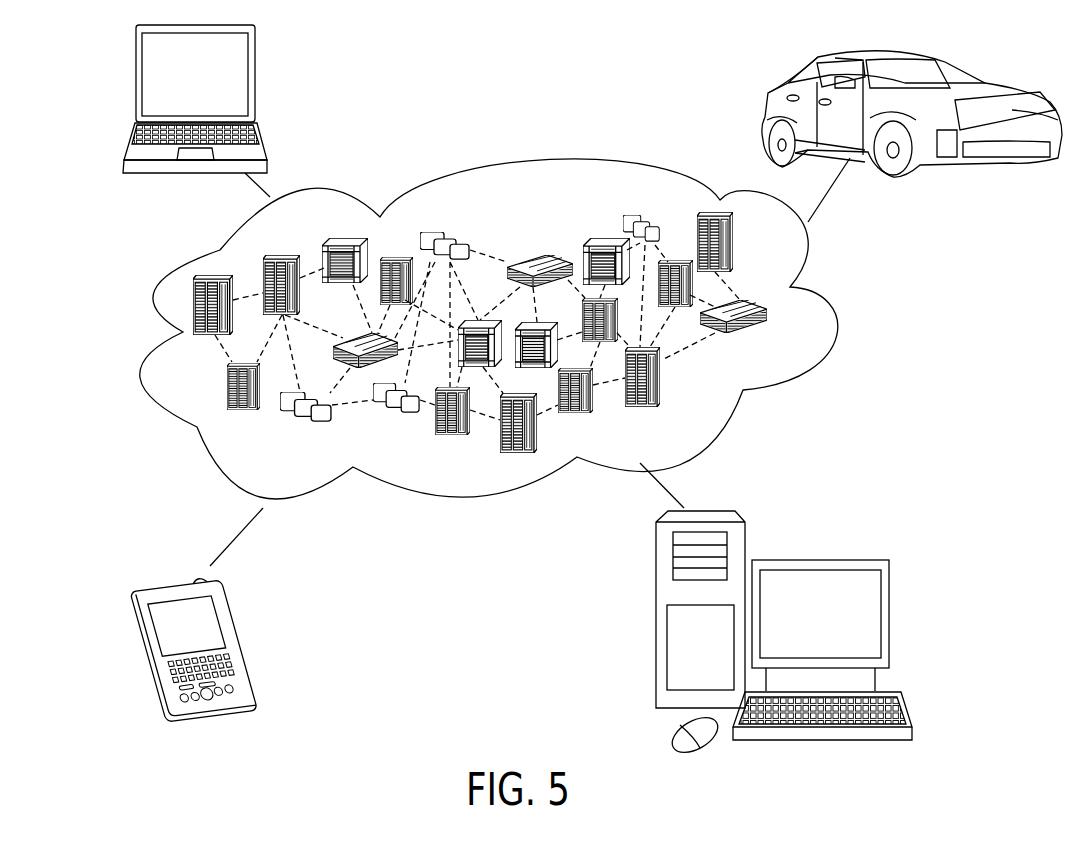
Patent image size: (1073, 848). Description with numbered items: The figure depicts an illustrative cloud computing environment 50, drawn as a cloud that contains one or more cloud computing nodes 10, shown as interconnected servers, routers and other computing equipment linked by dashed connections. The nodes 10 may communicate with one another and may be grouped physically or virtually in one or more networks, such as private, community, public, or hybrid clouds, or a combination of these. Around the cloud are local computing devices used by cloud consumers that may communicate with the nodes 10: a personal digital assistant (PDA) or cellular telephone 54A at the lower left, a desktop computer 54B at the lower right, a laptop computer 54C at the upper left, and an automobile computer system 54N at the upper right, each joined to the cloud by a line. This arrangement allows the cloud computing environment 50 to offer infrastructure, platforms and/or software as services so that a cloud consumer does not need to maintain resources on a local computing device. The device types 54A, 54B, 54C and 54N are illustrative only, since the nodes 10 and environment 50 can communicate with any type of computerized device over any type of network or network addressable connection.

The cloud computing nodes 10 is at (783, 340).
The cloud computing environment 50 is at (835, 322).
The personal digital assistant (PDA) or cellular telephone 54A is at (244, 637).
The desktop computer 54B is at (853, 560).
The laptop computer 54C is at (257, 89).
The automobile computer system 54N is at (968, 74).